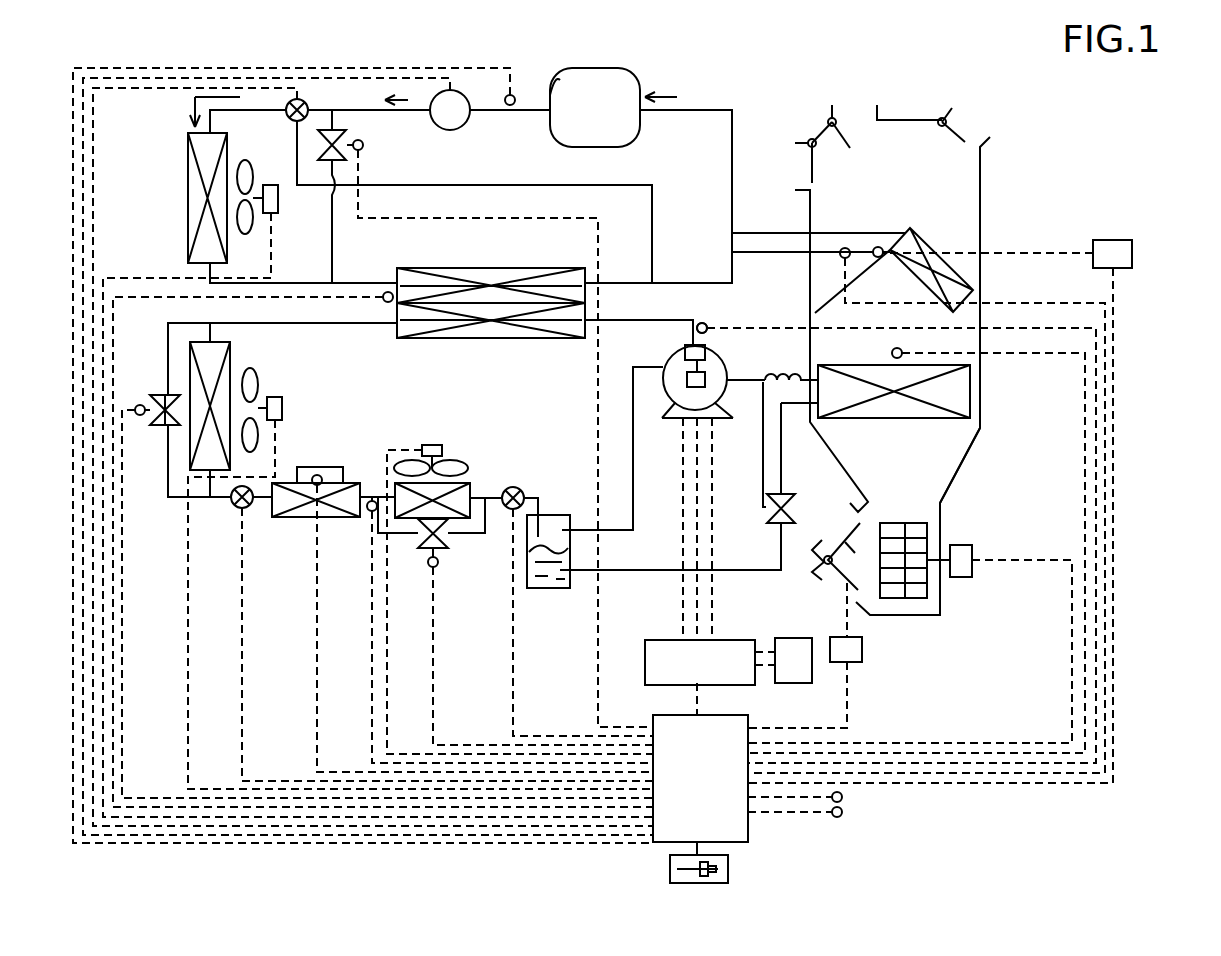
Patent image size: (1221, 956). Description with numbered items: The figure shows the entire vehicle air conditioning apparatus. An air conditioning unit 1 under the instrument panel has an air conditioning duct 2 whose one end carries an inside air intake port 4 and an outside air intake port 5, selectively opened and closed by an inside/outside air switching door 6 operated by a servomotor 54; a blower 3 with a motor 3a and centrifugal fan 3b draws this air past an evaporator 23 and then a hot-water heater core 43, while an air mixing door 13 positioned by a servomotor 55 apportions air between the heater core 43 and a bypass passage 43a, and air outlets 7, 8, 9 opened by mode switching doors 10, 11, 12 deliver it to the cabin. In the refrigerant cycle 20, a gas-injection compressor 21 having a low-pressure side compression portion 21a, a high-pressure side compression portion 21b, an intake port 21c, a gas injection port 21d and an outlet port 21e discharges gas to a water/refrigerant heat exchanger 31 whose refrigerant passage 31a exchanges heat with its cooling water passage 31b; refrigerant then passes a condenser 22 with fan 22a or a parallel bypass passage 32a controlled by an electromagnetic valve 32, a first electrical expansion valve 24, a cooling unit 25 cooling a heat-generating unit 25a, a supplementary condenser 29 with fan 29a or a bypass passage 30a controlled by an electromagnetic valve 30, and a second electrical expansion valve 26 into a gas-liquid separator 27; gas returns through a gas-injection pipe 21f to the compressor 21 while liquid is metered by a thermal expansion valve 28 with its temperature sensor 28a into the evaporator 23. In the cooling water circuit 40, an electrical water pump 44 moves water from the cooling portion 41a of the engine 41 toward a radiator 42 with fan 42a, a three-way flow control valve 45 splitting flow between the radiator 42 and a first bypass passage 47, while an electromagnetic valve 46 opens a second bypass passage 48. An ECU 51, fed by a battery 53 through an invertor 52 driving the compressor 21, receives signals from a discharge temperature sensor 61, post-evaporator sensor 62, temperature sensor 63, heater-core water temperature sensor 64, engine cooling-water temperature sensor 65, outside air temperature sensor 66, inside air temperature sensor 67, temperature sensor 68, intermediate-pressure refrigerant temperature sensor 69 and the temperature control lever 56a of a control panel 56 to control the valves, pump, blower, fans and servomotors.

The air conditioning unit 1 is at (995, 195).
The air conditioning duct 2 is at (960, 470).
The blower 3 is at (895, 598).
The motor 3a is at (960, 577).
The centrifugal fan 3b is at (912, 598).
The inside air intake port 4 is at (835, 588).
The outside air intake port 5 is at (835, 528).
The inside/outside air switching door 6 is at (845, 575).
The air outlet 7 is at (800, 172).
The air outlet 8 is at (857, 112).
The air outlet 9 is at (965, 128).
The mode switching door 10 is at (820, 175).
The mode switching door 11 is at (848, 135).
The mode switching door 12 is at (952, 148).
The air mixing door 13 is at (830, 293).
The refrigerant cycle 20 is at (565, 645).
The compressor 21 is at (672, 418).
The low-pressure side compression portion 21a is at (633, 367).
The high-pressure side compression portion 21b is at (718, 328).
The intake port 21c is at (706, 378).
The gas injection port 21d is at (680, 355).
The outlet port 21e is at (690, 345).
The gas-injection pipe 21f is at (633, 405).
The condenser 22 is at (235, 365).
The fan 22a is at (277, 397).
The evaporator 23 is at (893, 410).
The first electrical expansion valve 24 is at (235, 506).
The cooling unit 25 is at (300, 517).
The heat-generating unit 25a is at (312, 467).
The second electrical expansion valve 26 is at (520, 488).
The gas-liquid separator 27 is at (548, 588).
The thermal expansion valve 28 is at (795, 495).
The temperature sensor 28a is at (795, 390).
The supplementary condenser 29 is at (462, 495).
The fan 29a is at (432, 445).
The electromagnetic valve 30 is at (440, 548).
The bypass passage 30a is at (428, 565).
The water/refrigerant heat exchanger 31 is at (397, 335).
The refrigerant passage 31a is at (487, 340).
The cooling water passage 31b is at (490, 275).
The electromagnetic valve 32 is at (160, 398).
The bypass passage 32a is at (168, 335).
The cooling water circuit 40 is at (723, 97).
The engine 41 is at (619, 62).
The cooling portion 41a is at (567, 93).
The radiator 42 is at (190, 205).
The fan 42a is at (270, 185).
The heater core 43 is at (930, 255).
The bypass passage 43a is at (828, 258).
The electrical water pump 44 is at (455, 130).
The flow control valve 45 is at (308, 107).
The electromagnetic valve 46 is at (363, 145).
The first bypass passage 47 is at (652, 185).
The second bypass passage 48 is at (332, 210).
The electronic control unit 51 is at (735, 825).
The invertor 52 is at (665, 640).
The battery 53 is at (800, 683).
The servomotor 54 is at (855, 660).
The servomotor 55 is at (1112, 240).
The control panel 56 is at (728, 865).
The temperature control lever 56a is at (720, 873).
The discharge temperature sensor 61 is at (702, 323).
The post-evaporator sensor 62 is at (892, 353).
The temperature sensor 63 is at (385, 292).
The heater-core water temperature sensor 64 is at (850, 248).
The engine cooling-water temperature sensor 65 is at (505, 98).
The outside air temperature sensor 66 is at (842, 797).
The inside air temperature sensor 67 is at (842, 812).
The temperature sensor 68 is at (320, 475).
The intermediate-pressure refrigerant temperature sensor 69 is at (368, 512).